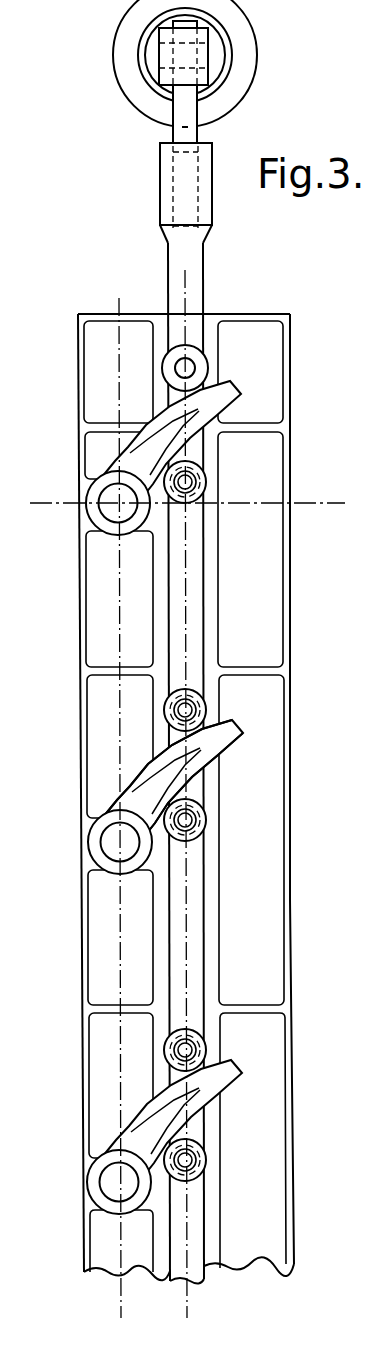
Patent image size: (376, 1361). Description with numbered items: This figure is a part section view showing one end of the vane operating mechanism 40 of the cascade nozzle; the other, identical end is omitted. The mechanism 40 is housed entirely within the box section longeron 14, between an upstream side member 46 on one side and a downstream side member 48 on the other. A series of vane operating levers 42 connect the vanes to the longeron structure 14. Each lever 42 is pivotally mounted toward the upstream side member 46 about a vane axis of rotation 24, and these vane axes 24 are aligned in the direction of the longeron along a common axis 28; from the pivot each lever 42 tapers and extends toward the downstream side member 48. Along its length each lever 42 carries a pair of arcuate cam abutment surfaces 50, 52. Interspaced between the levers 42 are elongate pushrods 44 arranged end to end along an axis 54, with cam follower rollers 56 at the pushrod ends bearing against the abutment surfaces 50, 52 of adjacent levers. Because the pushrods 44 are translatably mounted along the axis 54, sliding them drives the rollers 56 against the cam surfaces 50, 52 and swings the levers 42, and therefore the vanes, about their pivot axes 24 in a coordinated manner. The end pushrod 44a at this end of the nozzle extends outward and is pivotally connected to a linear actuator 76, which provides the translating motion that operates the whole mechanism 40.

The vane operating mechanism 40 is at (61, 258).
The longeron 14 is at (238, 313).
The upstream side member 46 is at (80, 943).
The downstream side member 48 is at (292, 891).
The pushrod 44 is at (197, 595).
The end pushrod 44a is at (167, 245).
The linear actuator 76 is at (127, 100).
The vane operating lever 42 is at (239, 391).
The vane axis of rotation 24 is at (89, 527).
The cam abutment surface 50 is at (143, 762).
The cam abutment surface 52 is at (205, 767).
The roller 56 is at (206, 473).
The axis 28 is at (116, 1305).
The axis 54 is at (190, 1303).